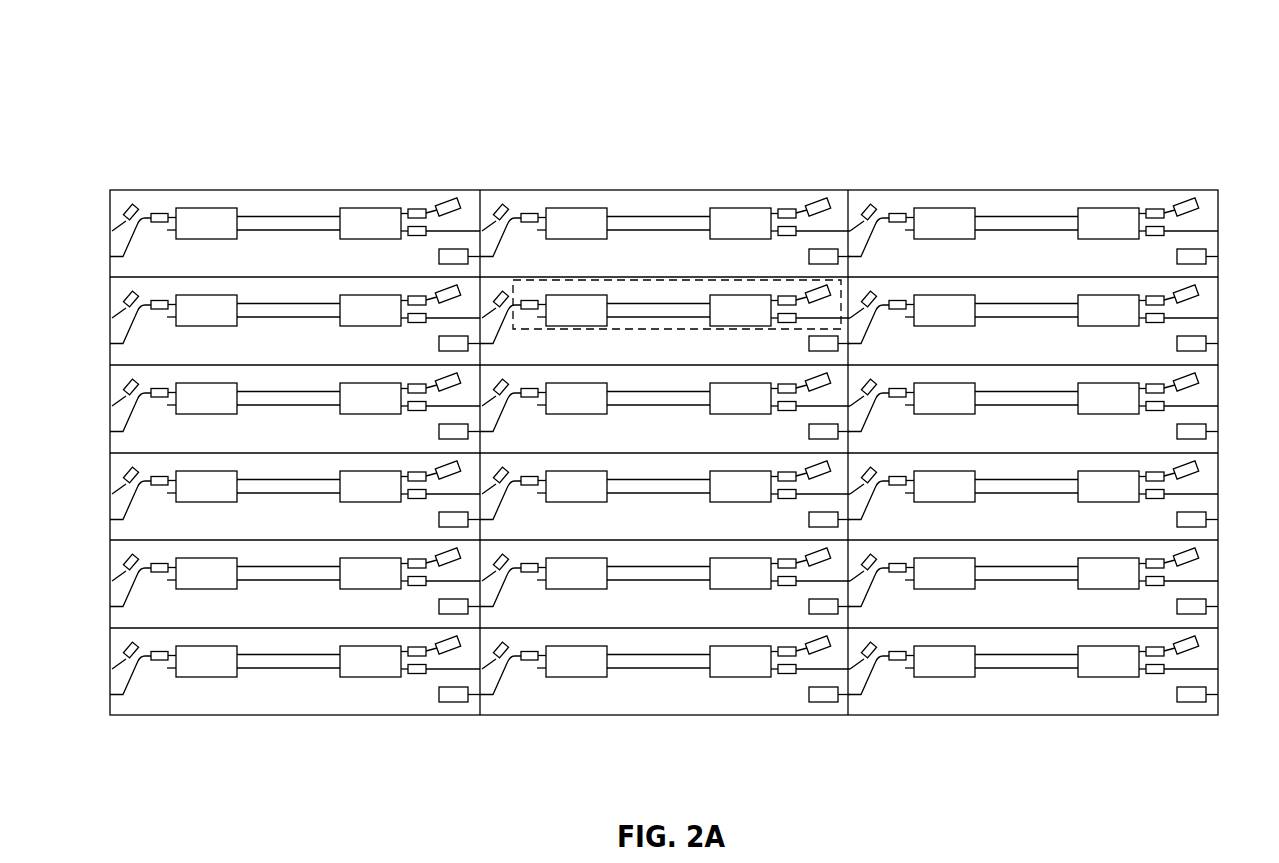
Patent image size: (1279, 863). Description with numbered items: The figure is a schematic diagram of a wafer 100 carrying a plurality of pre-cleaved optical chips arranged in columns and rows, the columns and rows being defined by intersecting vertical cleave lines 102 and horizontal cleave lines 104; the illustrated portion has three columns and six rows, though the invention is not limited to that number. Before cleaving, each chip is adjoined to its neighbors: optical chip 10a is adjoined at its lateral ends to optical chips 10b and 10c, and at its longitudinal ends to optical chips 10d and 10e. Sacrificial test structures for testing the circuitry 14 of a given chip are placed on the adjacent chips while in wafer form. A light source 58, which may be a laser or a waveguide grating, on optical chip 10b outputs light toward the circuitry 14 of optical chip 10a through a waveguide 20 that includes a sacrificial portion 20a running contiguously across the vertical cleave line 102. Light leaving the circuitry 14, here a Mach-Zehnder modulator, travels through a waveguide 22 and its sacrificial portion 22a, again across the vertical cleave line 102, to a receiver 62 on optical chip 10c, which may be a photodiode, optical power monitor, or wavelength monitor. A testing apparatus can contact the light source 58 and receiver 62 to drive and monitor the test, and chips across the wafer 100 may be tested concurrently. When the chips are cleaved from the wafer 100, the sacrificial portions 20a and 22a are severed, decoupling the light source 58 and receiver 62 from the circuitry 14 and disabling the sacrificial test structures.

The wafer 100 is at (850, 47).
The vertical cleave lines 102 is at (478, 207).
The horizontal cleave lines 104 is at (128, 276).
The optical chip 10a is at (476, 280).
The optical chip 10b is at (117, 290).
The optical chip 10c is at (1210, 298).
The optical chip 10d is at (665, 202).
The optical chip 10e is at (704, 433).
The circuitry 14 is at (630, 283).
The waveguide 20 is at (140, 312).
The sacrificial portion of waveguide 20a is at (475, 343).
The waveguide 22 is at (813, 317).
The sacrificial portion of waveguide 22a is at (857, 310).
The light source 58 is at (439, 344).
The receiver 62 is at (872, 290).